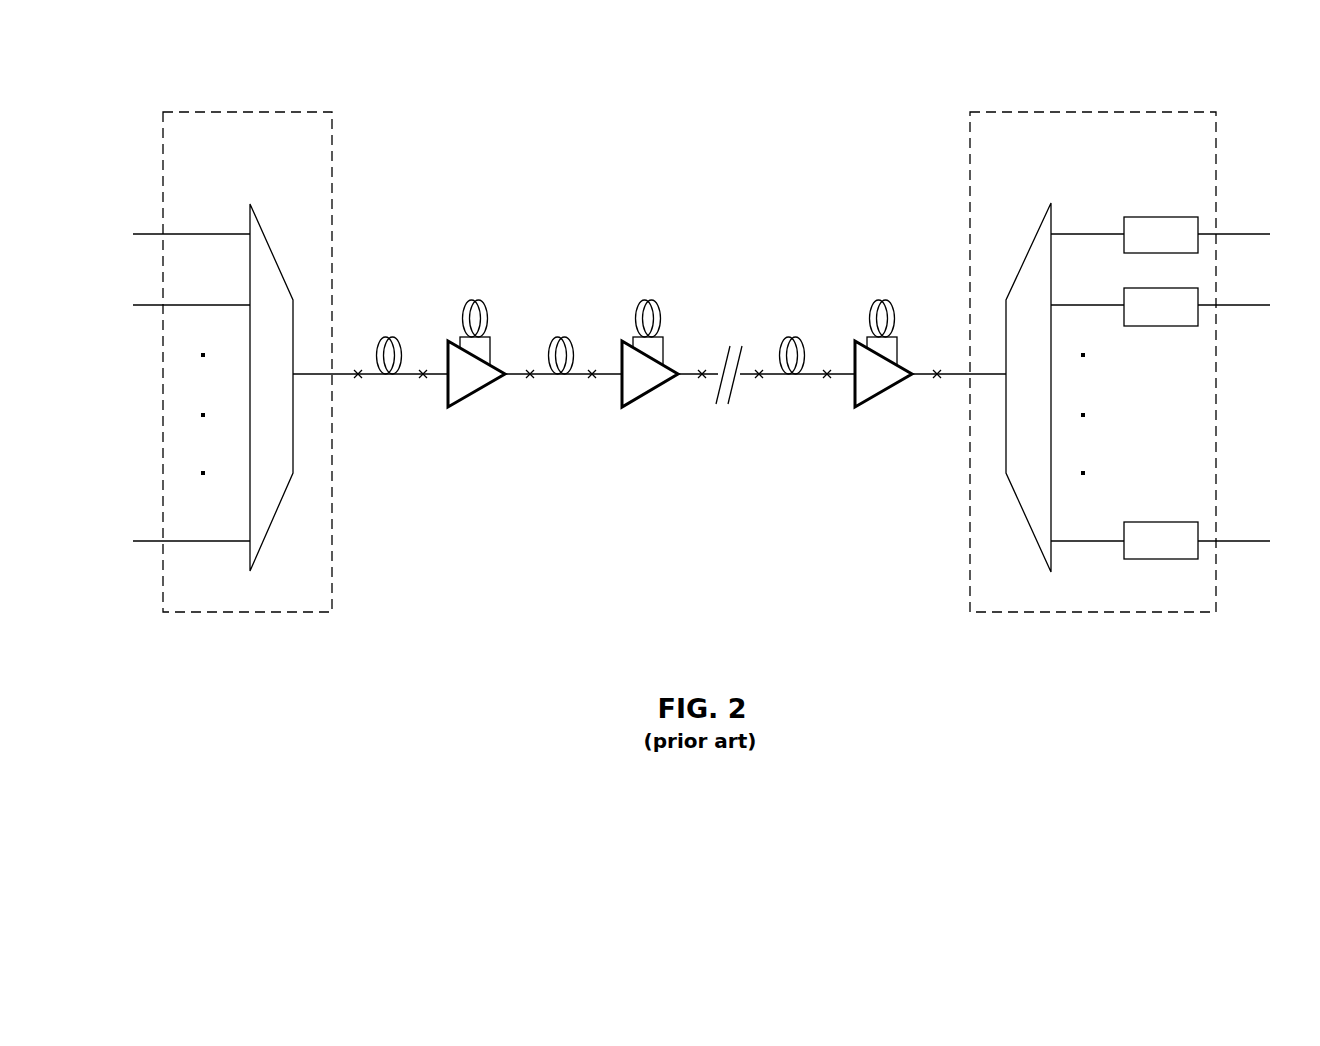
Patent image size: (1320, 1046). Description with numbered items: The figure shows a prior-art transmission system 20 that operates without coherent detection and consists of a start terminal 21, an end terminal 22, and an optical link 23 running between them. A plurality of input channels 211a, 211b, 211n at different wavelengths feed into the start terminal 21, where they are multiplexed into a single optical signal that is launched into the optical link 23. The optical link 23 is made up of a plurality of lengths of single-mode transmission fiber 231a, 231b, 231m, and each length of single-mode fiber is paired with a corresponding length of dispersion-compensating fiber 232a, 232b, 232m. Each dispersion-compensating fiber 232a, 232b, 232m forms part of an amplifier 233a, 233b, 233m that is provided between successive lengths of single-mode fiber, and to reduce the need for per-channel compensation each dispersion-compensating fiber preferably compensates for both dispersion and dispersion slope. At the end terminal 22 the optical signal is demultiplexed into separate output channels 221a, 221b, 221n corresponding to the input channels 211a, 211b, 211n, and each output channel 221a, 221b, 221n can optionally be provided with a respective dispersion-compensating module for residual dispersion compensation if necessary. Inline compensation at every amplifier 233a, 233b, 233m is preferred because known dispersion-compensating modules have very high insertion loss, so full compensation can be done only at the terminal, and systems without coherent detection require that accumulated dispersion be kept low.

The transmission system 20 is at (687, 62).
The start terminal 21 is at (289, 162).
The end terminal 22 is at (1134, 162).
The optical link 23 is at (347, 227).
The input channel 211a is at (227, 229).
The input channel 211b is at (227, 300).
The input channel 211n is at (227, 536).
The output channel 221a is at (1110, 229).
The output channel 221b is at (1110, 300).
The output channel 221n is at (1110, 536).
The single-mode transmission fiber 231a is at (368, 331).
The single-mode transmission fiber 231b is at (540, 331).
The single-mode transmission fiber 231m is at (768, 331).
The dispersion-compensating fiber 232a is at (454, 292).
The dispersion-compensating fiber 232b is at (627, 292).
The dispersion-compensating fiber 232m is at (858, 292).
The amplifier 233a is at (472, 415).
The amplifier 233b is at (644, 415).
The amplifier 233m is at (879, 415).